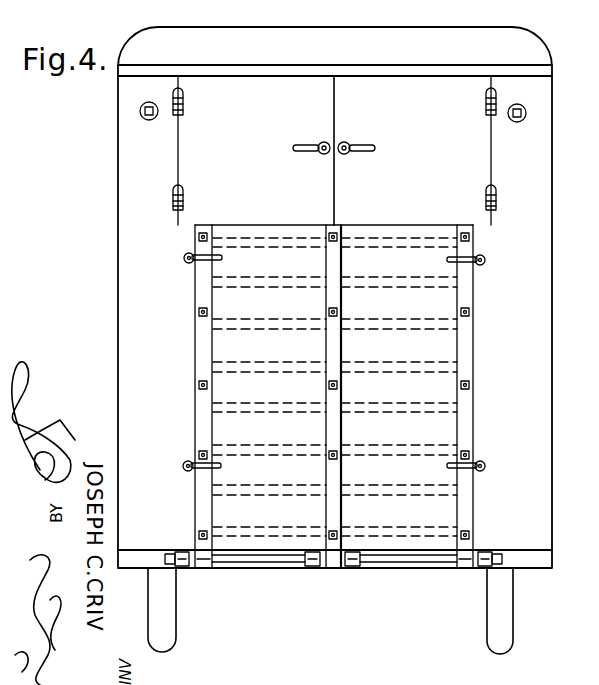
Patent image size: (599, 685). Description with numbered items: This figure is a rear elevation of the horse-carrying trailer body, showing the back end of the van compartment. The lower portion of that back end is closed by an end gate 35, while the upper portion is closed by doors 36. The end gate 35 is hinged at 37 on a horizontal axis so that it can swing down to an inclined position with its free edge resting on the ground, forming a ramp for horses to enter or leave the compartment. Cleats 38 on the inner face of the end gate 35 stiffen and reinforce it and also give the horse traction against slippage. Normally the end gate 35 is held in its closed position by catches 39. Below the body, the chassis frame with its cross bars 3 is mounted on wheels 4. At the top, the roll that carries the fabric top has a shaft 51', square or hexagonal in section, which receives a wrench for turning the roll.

The cross bars 3 is at (443, 566).
The wheels 4 is at (178, 625).
The end gate 35 is at (413, 518).
The doors 36 is at (334, 150).
The hinge 37 is at (278, 560).
The cleats 38 is at (318, 450).
The catches 39 is at (184, 262).
The shaft 51' is at (334, 120).